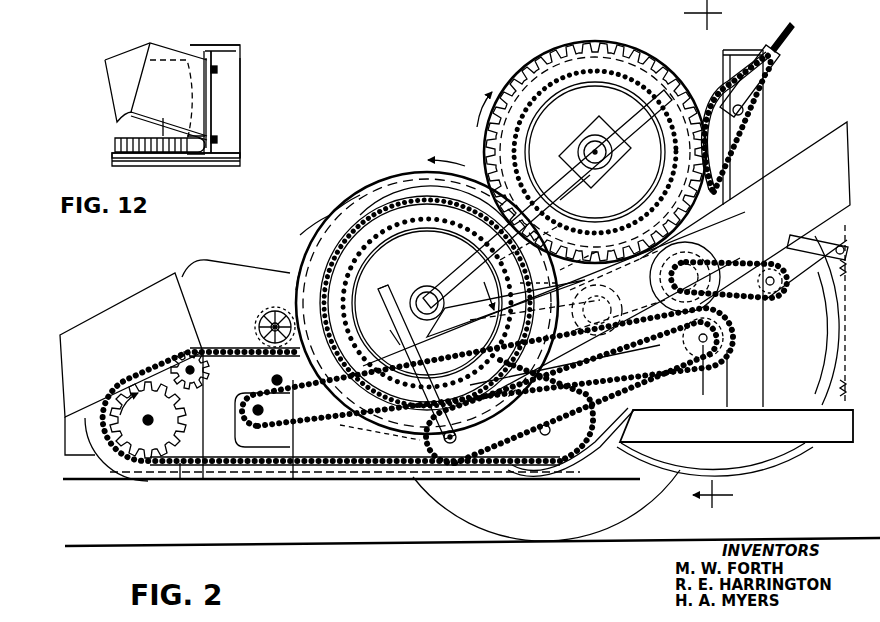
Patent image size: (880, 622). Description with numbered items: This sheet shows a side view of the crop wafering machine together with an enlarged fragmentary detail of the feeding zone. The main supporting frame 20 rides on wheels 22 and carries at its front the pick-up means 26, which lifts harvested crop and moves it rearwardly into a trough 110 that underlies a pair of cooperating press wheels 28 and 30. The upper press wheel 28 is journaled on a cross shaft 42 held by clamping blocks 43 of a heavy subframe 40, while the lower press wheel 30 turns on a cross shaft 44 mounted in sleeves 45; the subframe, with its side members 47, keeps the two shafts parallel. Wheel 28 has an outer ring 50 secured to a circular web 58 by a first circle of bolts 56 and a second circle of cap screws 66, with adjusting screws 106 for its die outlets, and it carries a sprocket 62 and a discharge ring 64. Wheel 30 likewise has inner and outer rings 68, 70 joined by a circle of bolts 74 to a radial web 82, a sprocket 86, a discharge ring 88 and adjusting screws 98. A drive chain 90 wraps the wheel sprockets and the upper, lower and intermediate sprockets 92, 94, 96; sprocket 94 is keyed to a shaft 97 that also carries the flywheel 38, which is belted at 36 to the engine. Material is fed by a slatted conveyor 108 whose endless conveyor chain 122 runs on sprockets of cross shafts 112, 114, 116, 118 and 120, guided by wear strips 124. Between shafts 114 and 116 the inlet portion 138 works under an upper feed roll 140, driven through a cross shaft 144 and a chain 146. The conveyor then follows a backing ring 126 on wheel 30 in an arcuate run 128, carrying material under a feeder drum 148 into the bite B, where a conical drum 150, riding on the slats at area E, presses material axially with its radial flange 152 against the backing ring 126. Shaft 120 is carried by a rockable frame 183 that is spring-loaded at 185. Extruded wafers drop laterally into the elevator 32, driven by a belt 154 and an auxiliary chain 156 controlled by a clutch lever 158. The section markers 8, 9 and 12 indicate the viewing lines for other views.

In FIG. 2, the pivot axis 8 is at (533, 284).
In FIG. 2, the section line 9 is at (708, 257).
In FIG. 2, the frame member 12 is at (560, 265).
In FIG. 2, the main supporting frame 20 is at (840, 443).
In FIG. 2, the wheels 22 is at (640, 498).
In FIG. 2, the pick-up means 26 is at (93, 330).
In FIG. 2, the rear or upper press wheel 28 is at (628, 42).
In FIG. 12, the lower or forward press wheel 30 is at (110, 147).
In FIG. 2, the lower or forward press wheel 30 is at (362, 186).
In FIG. 2, the elevator 32 is at (823, 140).
In FIG. 2, the belt drive 36 is at (780, 290).
In FIG. 2, the flywheel 38 is at (818, 376).
In FIG. 2, the subframe 40 is at (444, 291).
In FIG. 2, the cross shaft 42 is at (607, 165).
In FIG. 2, the clamping blocks 43 is at (612, 154).
In FIG. 2, the cross shaft 44 is at (465, 332).
In FIG. 2, the sleeves 45 is at (420, 305).
In FIG. 2, the side members 47 is at (578, 214).
In FIG. 2, the outer plate-like ring 50 is at (655, 62).
In FIG. 2, the first circle of bolts 56 is at (645, 95).
In FIG. 2, the circular web 58 is at (563, 123).
In FIG. 2, the sprocket 62 is at (640, 50).
In FIG. 2, the discharge ring 64 is at (598, 80).
In FIG. 2, the second circle of cap screws 66 is at (548, 55).
In FIG. 12, the inner ring 68 is at (163, 133).
In FIG. 12, the outer ring 70 is at (180, 154).
In FIG. 2, the outer ring 70 is at (356, 222).
In FIG. 2, the circle of bolts 74 is at (408, 225).
In FIG. 2, the radial web 82 is at (404, 266).
In FIG. 2, the sprocket 86 is at (345, 238).
In FIG. 2, the discharge ring 88 is at (378, 305).
In FIG. 2, the drive chain 90 is at (402, 210).
In FIG. 2, the upper sprocket 92 is at (760, 110).
In FIG. 2, the lower sprocket 94 is at (742, 378).
In FIG. 2, the intermediate sprocket 96 is at (706, 256).
In FIG. 2, the shaft 97 is at (703, 356).
In FIG. 2, the adjusting screws 98 is at (438, 216).
In FIG. 2, the adjusting screws 106 is at (580, 148).
In FIG. 12, the conveyor 108 is at (226, 109).
In FIG. 2, the conveyor 108 is at (252, 470).
In FIG. 12, the trough 110 is at (242, 143).
In FIG. 2, the trough 110 is at (337, 481).
In FIG. 2, the cross shaft 112 is at (148, 420).
In FIG. 2, the cross shaft 114 is at (188, 364).
In FIG. 2, the cross shaft 116 is at (271, 380).
In FIG. 2, the cross shaft 118 is at (545, 436).
In FIG. 2, the cross shaft 120 is at (487, 367).
In FIG. 12, the endless conveyor chain 122 is at (218, 71).
In FIG. 2, the endless conveyor chain 122 is at (215, 457).
In FIG. 12, the wear strips 124 is at (240, 49).
In FIG. 12, the backing ring 126 is at (200, 150).
In FIG. 2, the backing ring 126 is at (306, 246).
In FIG. 2, the arcuate run 128 is at (345, 435).
In FIG. 2, the inlet portion 138 is at (225, 348).
In FIG. 2, the upper feed roll 140 is at (273, 310).
In FIG. 2, the cross shaft 144 is at (252, 411).
In FIG. 2, the chain 146 is at (284, 424).
In FIG. 12, the feeder drum 148 is at (121, 66).
In FIG. 12, the conical drum 150 is at (153, 46).
In FIG. 12, the radial flange 152 is at (120, 116).
In FIG. 2, the belt 154 is at (612, 280).
In FIG. 2, the auxiliary chain 156 is at (445, 447).
In FIG. 2, the lever 158 is at (392, 335).
In FIG. 2, the frame 183 is at (830, 240).
In FIG. 2, the spring 185 is at (818, 358).
In FIG. 12, the contact area E is at (216, 96).
In FIG. 12, the bite B is at (214, 160).